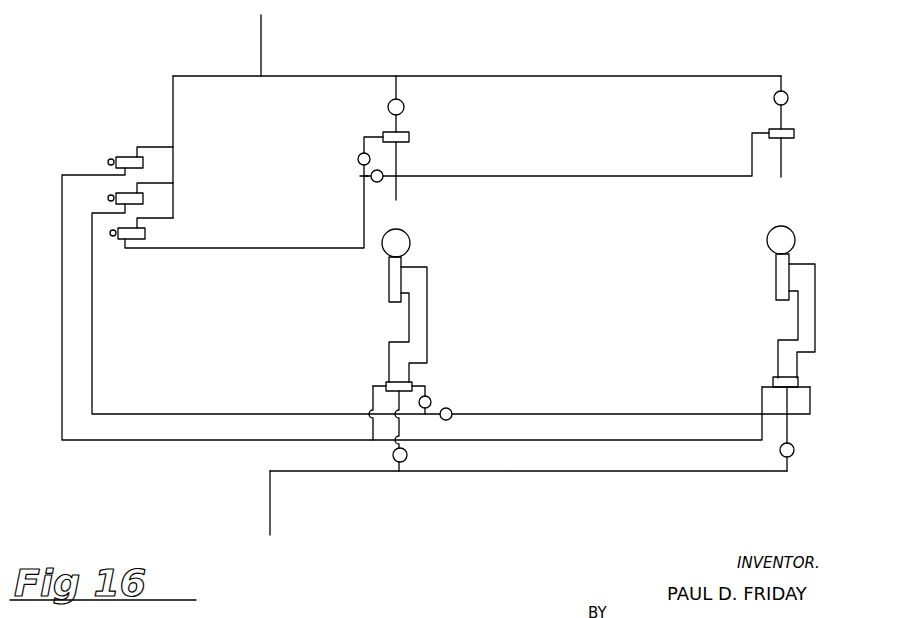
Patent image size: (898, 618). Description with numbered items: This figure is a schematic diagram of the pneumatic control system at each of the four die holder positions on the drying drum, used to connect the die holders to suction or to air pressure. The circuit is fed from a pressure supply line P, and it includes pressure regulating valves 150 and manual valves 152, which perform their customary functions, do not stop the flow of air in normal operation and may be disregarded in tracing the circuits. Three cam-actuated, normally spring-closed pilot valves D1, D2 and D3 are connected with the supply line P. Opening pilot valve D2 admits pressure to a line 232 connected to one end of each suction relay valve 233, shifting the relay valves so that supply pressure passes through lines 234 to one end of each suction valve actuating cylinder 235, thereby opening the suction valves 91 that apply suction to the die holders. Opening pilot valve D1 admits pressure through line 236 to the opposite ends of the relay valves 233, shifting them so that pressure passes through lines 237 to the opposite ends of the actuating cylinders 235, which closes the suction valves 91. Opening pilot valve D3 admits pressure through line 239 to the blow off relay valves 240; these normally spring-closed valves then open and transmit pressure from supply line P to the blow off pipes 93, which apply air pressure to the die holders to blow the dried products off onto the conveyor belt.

The pressure supply line P is at (258, 36).
The pilot valve D1 is at (128, 156).
The pilot valve D2 is at (112, 193).
The pilot valve D3 is at (147, 233).
The pressure regulating valve 150 is at (388, 107).
The blow off relay valve 240 is at (409, 137).
The blow off pipe 93 is at (399, 190).
The manual valve 152 is at (364, 172).
The suction valve 91 is at (410, 246).
The suction valve actuating cylinder 235 is at (389, 281).
The line 237 is at (427, 287).
The line 234 is at (409, 322).
The suction relay valve 233 is at (418, 382).
The line 236 is at (62, 290).
The line 232 is at (92, 298).
The line 239 is at (250, 247).